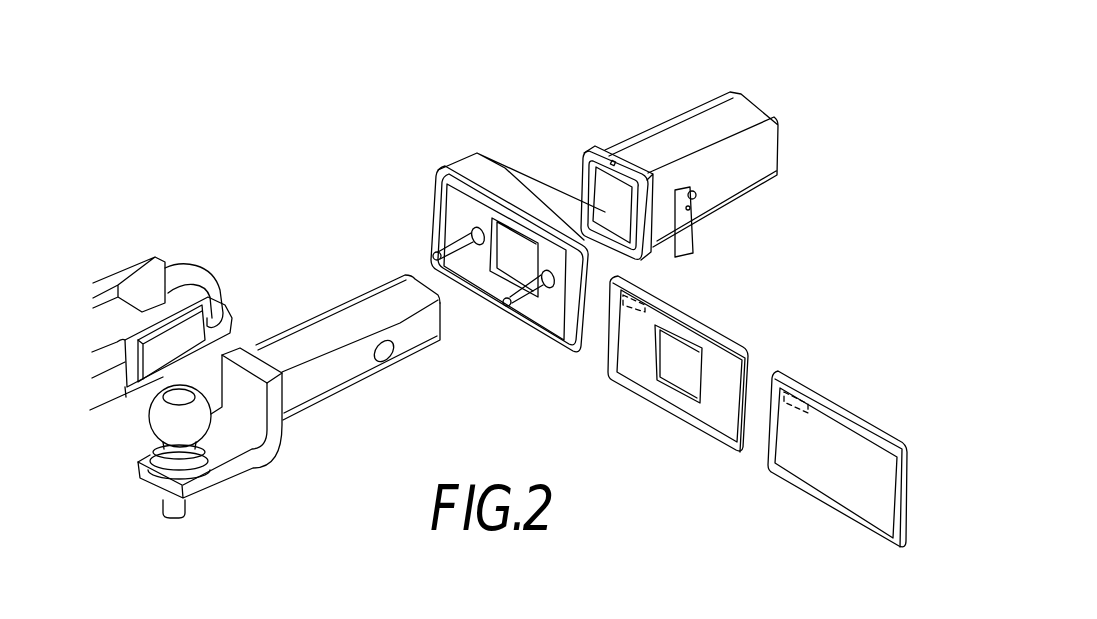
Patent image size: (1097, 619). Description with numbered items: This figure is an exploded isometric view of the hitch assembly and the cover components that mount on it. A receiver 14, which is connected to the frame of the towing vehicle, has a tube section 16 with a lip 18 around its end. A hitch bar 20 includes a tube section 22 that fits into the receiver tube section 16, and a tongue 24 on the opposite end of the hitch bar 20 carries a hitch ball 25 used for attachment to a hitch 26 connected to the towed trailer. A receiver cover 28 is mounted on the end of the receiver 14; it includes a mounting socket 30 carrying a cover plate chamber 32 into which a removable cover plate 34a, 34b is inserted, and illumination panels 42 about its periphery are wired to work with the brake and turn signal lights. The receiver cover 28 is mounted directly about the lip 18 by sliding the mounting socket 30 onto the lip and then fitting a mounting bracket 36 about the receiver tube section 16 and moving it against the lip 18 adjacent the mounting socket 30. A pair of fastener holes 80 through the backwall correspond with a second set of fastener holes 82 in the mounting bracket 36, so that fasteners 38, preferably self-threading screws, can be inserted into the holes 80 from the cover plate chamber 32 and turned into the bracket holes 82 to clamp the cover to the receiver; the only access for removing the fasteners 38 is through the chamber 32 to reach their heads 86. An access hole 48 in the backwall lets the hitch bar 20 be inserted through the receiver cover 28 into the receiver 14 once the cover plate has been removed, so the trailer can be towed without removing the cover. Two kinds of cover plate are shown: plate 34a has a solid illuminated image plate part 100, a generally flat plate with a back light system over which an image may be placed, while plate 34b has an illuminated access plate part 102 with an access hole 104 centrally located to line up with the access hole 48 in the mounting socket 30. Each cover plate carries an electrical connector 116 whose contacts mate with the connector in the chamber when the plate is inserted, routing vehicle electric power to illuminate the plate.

The receiver 14 is at (710, 162).
The tube section 16 is at (748, 111).
The lip 18 is at (608, 157).
The hitch bar 20 is at (306, 326).
The tube section 22 is at (318, 387).
The tongue 24 is at (227, 475).
The hitch ball 25 is at (158, 413).
The hitch 26 is at (142, 257).
The receiver cover 28 is at (481, 253).
The mounting socket 30 is at (524, 188).
The cover plate chamber 32 is at (551, 318).
The cover plate 34a is at (865, 458).
The cover plate 34b is at (711, 375).
The mounting bracket 36 is at (697, 232).
The fasteners 38 is at (435, 257).
The illumination panels 42 is at (440, 178).
The access hole 48 is at (532, 267).
The fastener holes 80 is at (474, 234).
The fastener holes 82 is at (697, 205).
The heads 86 is at (503, 299).
The image plate part 100 is at (835, 492).
The access plate part 102 is at (717, 418).
The access hole 104 is at (677, 370).
The electrical connector 116 is at (648, 297).